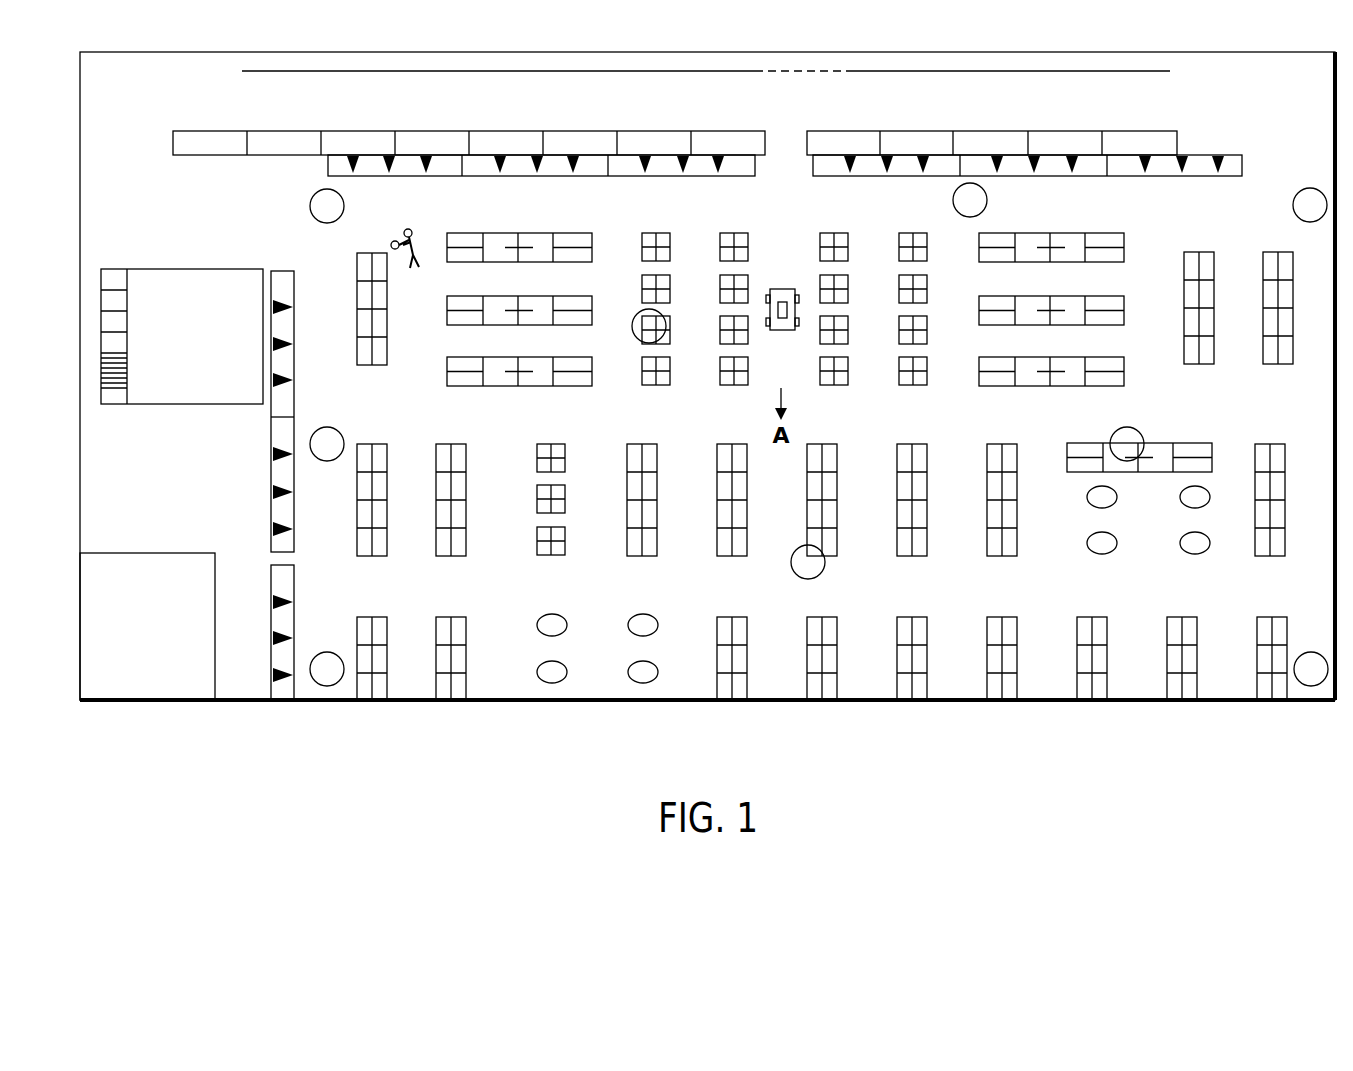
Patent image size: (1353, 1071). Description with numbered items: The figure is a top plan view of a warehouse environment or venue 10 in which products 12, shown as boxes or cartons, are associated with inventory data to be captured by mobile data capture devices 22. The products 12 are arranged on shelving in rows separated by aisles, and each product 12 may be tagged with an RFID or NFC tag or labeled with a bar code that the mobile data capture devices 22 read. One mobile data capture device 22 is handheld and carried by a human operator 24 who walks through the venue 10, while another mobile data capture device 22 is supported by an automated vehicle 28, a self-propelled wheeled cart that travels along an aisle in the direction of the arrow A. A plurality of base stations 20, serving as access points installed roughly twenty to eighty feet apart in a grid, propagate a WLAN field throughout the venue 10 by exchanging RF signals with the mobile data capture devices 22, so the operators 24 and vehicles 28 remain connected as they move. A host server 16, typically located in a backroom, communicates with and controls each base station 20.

The warehouse environment or venue 10 is at (155, 98).
The products 12 is at (364, 270).
The host server 16 is at (139, 693).
The base stations 20 is at (715, 478).
The mobile data capture devices 22 is at (391, 243).
The human operator 24 is at (408, 229).
The automated vehicle 28 is at (788, 278).